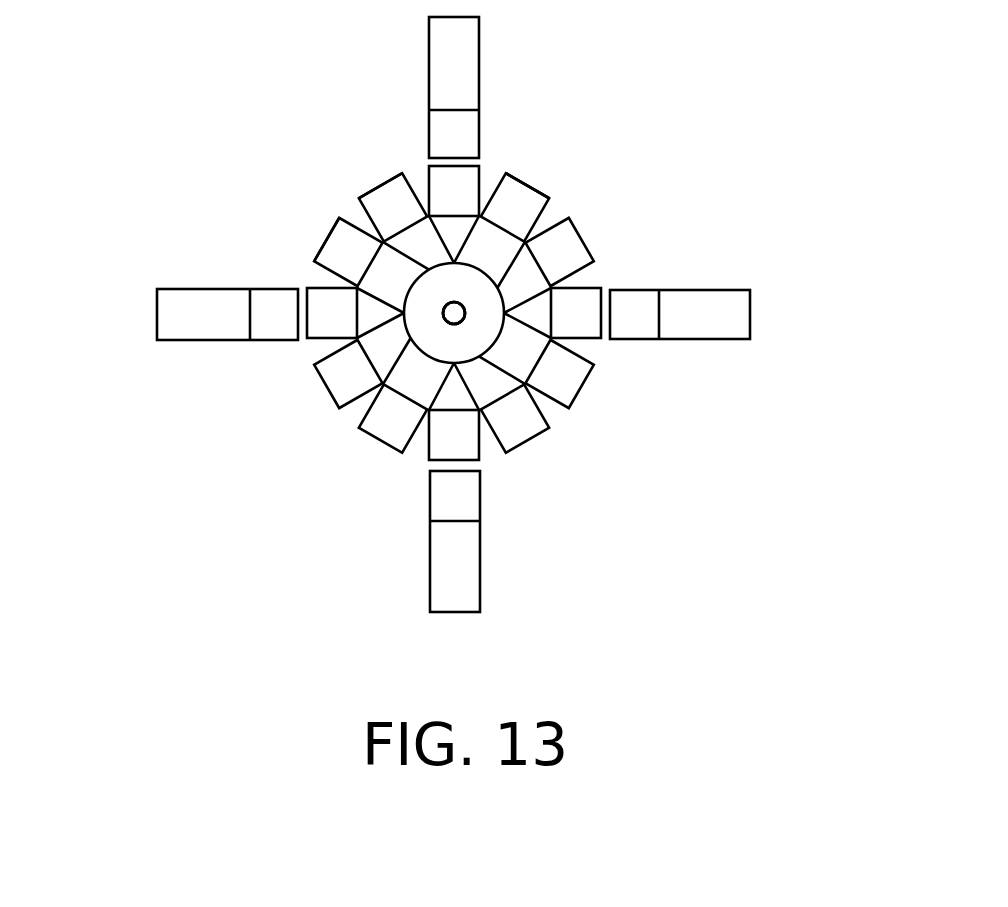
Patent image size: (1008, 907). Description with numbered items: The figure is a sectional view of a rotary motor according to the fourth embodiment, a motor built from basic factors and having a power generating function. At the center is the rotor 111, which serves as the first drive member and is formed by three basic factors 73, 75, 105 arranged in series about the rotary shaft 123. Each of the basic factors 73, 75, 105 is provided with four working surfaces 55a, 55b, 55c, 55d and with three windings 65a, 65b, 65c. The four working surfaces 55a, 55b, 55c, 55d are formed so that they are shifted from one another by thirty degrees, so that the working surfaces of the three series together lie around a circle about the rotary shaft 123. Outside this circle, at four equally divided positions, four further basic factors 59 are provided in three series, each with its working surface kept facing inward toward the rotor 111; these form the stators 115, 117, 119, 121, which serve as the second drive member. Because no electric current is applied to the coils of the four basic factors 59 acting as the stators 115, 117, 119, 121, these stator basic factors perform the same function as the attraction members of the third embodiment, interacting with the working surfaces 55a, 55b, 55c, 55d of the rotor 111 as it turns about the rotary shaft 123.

The basic factors 59 is at (454, 310).
The stator 117 is at (483, 82).
The stator 121 is at (483, 588).
The stator 119 is at (154, 317).
The stator 115 is at (753, 330).
The working surface 55a is at (368, 192).
The working surface 55b is at (322, 243).
The working surface 55c is at (375, 448).
The working surface 55d is at (587, 400).
The basic factor 73 is at (330, 227).
The basic factor 75 is at (386, 182).
The basic factor 105 is at (500, 172).
The rotor 111 is at (534, 181).
The rotary shaft 123 is at (428, 357).
The winding 65a is at (447, 323).
The winding 65b is at (403, 448).
The winding 65c is at (403, 463).